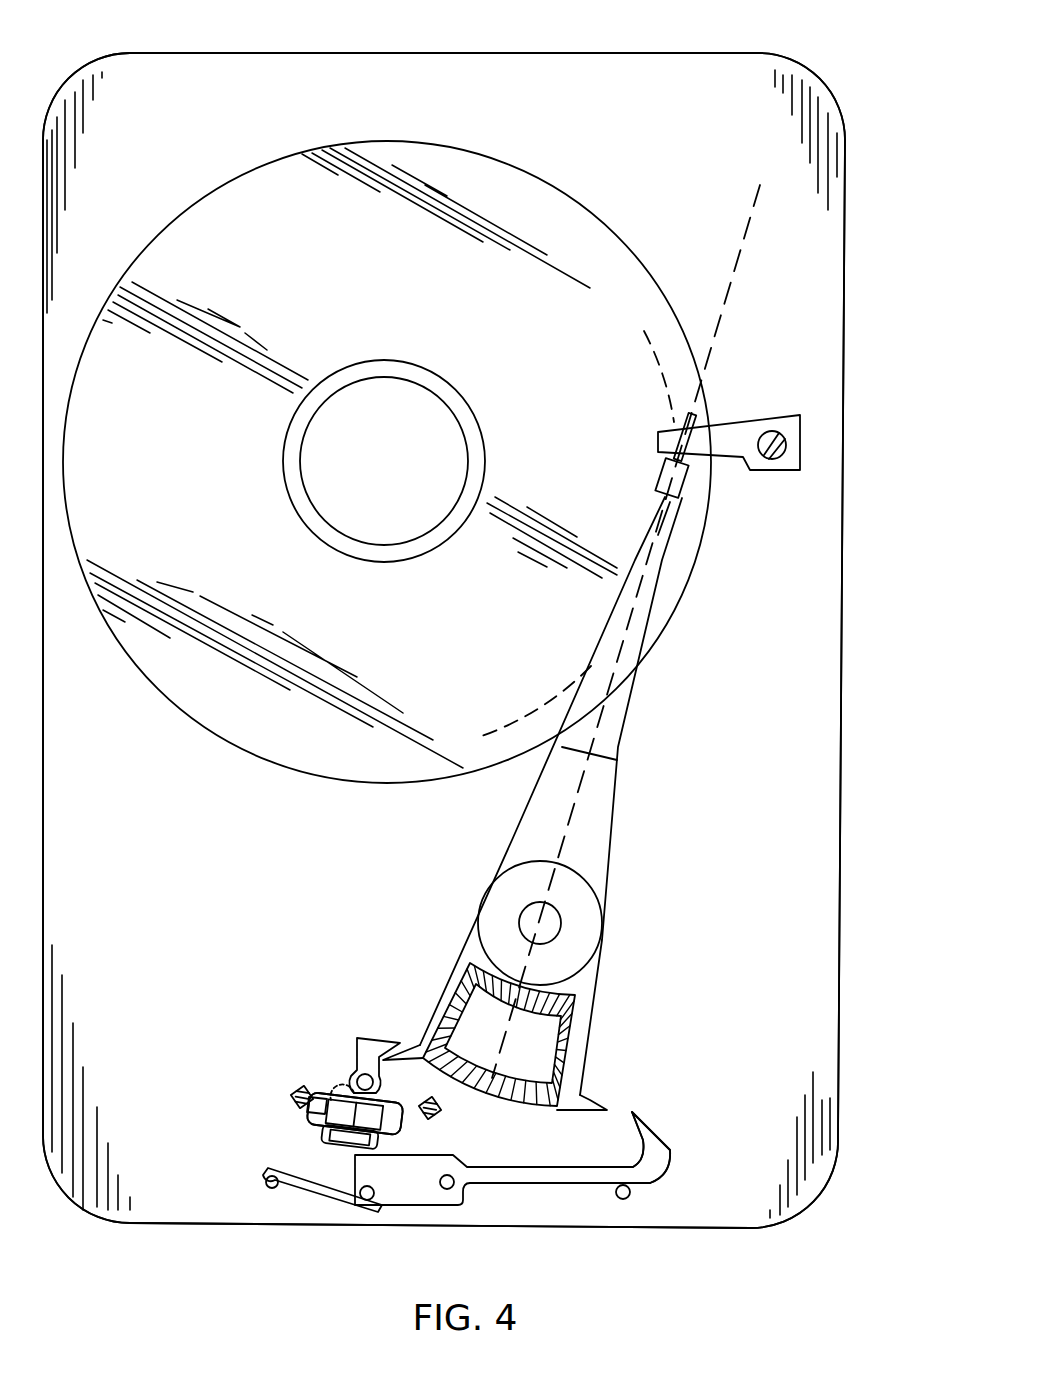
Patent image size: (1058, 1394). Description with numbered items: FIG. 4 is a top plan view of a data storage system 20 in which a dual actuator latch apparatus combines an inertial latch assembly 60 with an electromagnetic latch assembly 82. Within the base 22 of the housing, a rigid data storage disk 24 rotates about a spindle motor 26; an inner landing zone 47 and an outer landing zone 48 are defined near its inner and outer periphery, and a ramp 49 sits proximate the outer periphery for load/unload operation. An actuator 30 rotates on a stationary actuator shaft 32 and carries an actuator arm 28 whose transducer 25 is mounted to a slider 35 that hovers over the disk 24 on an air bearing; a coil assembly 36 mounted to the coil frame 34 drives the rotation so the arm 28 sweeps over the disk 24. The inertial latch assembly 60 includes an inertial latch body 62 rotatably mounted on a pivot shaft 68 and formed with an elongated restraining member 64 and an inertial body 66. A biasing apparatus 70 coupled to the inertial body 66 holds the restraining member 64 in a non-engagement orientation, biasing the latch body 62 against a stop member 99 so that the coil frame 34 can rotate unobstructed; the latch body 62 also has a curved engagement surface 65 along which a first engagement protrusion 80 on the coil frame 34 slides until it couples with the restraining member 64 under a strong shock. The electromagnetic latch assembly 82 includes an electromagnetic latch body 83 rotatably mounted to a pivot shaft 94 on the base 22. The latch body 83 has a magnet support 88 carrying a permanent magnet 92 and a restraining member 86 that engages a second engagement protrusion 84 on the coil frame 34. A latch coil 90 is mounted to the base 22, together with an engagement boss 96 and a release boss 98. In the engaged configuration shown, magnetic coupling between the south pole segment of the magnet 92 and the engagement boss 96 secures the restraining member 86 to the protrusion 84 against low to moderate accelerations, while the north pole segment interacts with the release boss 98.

The data storage system 20 is at (748, 30).
The base 22 is at (846, 264).
The data storage disk 24 is at (314, 247).
The transducer 25 is at (655, 476).
The spindle motor 26 is at (361, 505).
The actuator arm 28 is at (625, 722).
The actuator 30 is at (604, 900).
The actuator shaft 32 is at (547, 920).
The coil frame 34 is at (590, 1025).
The slider 35 is at (697, 480).
The coil assembly 36 is at (518, 1108).
The inner landing zone 47 is at (458, 405).
The outer landing zone 48 is at (672, 352).
The ramp 49 is at (757, 413).
The inertial latch assembly 60 is at (516, 1212).
The inertial latch body 62 is at (573, 1183).
The restraining member 64 is at (657, 1128).
The curved engagement surface 65 is at (640, 1145).
The inertial body 66 is at (402, 1202).
The pivot shaft 68 is at (455, 1188).
The biasing apparatus 70 is at (288, 1186).
The first engagement protrusion 80 is at (590, 1098).
The electromagnetic latch assembly 82 is at (320, 1004).
The electromagnetic latch body 83 is at (300, 1112).
The second engagement protrusion 84 is at (390, 1062).
The restraining member 86 is at (380, 1038).
The magnet support 88 is at (398, 1123).
The latch coil 90 is at (350, 1148).
The permanent magnet 92 is at (327, 1096).
The pivot shaft 94 is at (355, 1074).
The engagement boss 96 is at (292, 1095).
The release boss 98 is at (440, 1113).
The stop member 99 is at (628, 1195).